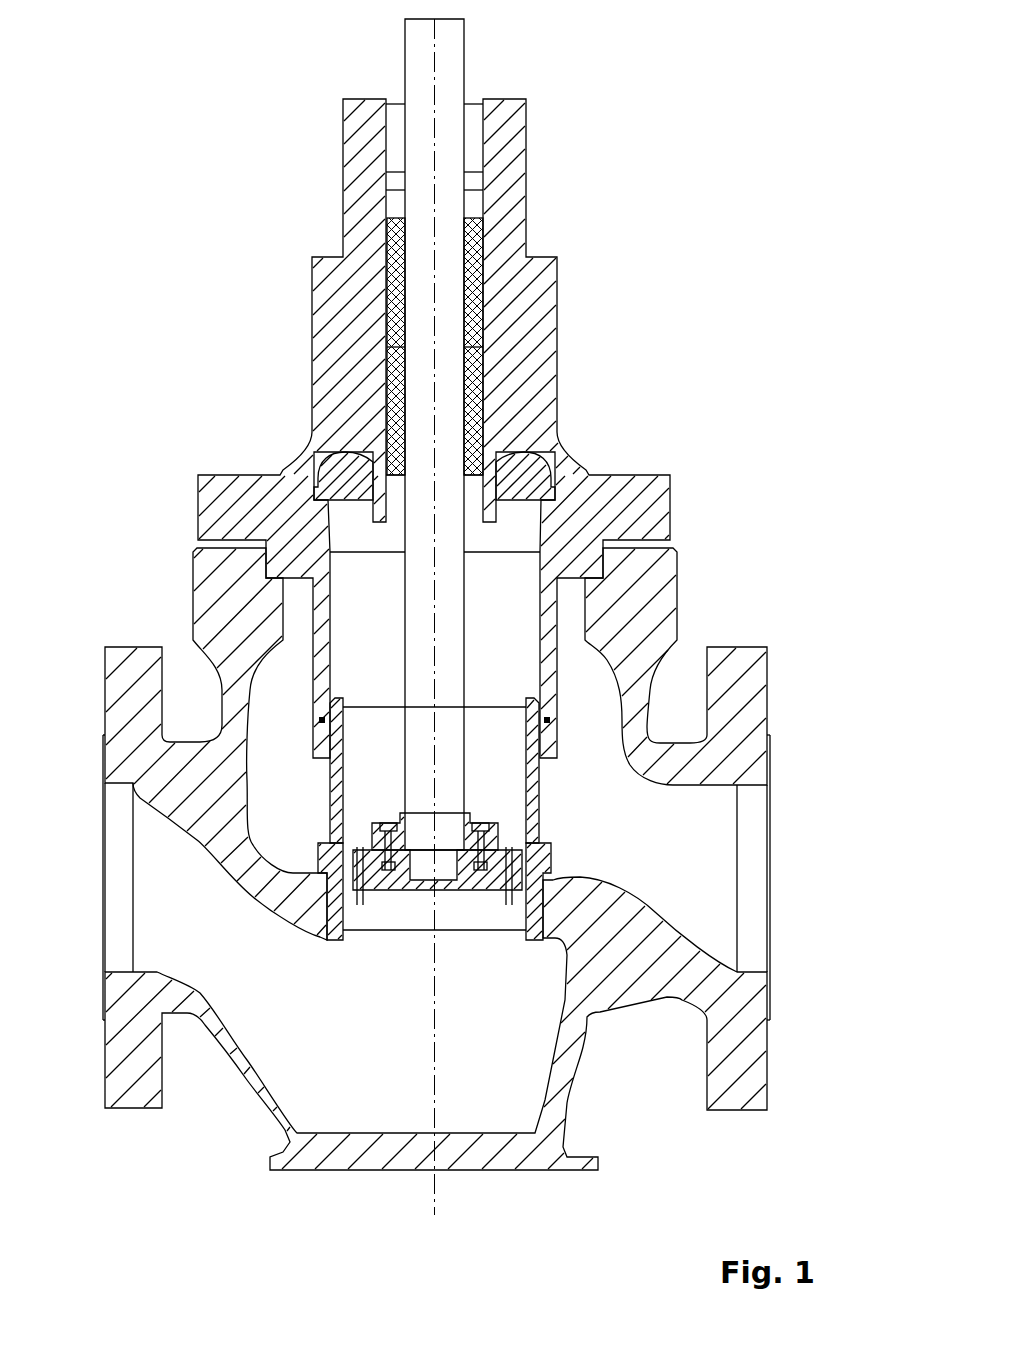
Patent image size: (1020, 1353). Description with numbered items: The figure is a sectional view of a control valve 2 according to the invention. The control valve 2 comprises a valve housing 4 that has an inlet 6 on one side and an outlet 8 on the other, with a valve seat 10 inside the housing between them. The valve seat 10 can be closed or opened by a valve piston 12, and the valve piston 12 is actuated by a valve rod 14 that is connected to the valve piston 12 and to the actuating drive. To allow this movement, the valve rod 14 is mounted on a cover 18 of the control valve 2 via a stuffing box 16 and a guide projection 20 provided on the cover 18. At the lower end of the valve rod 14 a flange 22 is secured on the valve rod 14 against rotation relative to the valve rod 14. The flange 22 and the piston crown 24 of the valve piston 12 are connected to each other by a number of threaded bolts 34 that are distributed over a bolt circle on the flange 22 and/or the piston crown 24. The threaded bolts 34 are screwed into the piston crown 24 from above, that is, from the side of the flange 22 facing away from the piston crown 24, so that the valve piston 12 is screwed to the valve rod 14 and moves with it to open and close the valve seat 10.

The control valve 2 is at (681, 440).
The valve housing 4 is at (653, 593).
The inlet 6 is at (170, 880).
The outlet 8 is at (710, 838).
The valve seat 10 is at (545, 876).
The valve piston 12 is at (540, 790).
The valve rod 14 is at (440, 638).
The stuffing box 16 is at (483, 357).
The cover 18 is at (533, 307).
The guide projection 20 is at (620, 690).
The flange 22 is at (372, 823).
The piston crown 24 is at (398, 890).
The threaded bolts 34 is at (388, 830).